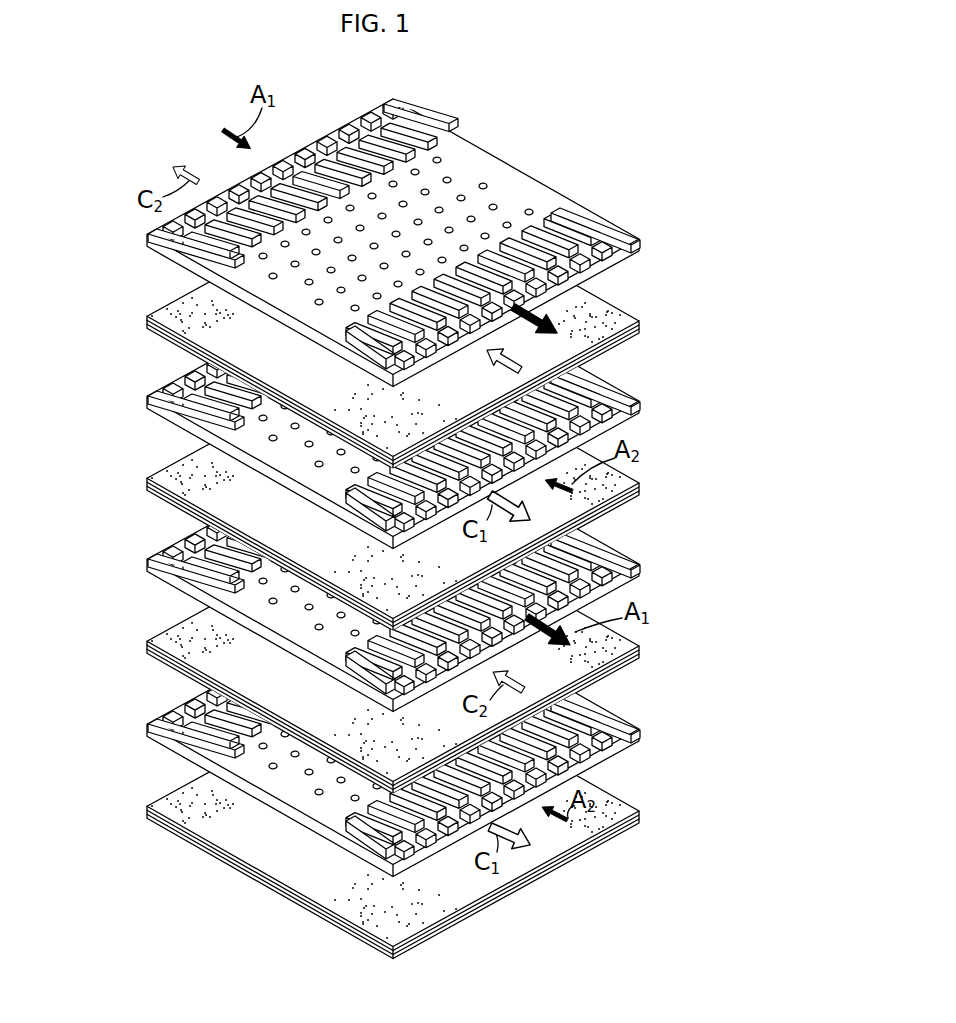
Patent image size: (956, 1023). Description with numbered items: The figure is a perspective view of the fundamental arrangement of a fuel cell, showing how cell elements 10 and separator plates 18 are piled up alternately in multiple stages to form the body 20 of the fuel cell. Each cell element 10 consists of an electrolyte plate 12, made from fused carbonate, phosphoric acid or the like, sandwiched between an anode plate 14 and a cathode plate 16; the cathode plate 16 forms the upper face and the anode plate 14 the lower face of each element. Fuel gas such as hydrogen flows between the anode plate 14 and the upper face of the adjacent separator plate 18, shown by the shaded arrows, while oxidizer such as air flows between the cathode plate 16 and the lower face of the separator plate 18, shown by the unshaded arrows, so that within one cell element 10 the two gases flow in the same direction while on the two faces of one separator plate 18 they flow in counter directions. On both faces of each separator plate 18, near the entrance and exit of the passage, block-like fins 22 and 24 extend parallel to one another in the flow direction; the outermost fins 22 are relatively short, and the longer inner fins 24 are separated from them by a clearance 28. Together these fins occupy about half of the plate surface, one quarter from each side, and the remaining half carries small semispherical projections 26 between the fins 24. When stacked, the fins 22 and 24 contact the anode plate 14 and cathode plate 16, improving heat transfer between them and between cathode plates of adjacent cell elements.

The cell element 10 is at (399, 570).
The electrolyte plate 12 is at (148, 812).
The anode plate 14 is at (152, 821).
The cathode plate 16 is at (157, 808).
The separator plate 18 is at (399, 467).
The body of the fuel cell 20 is at (100, 355).
The outermost fins 22 is at (633, 715).
The fins 24 is at (577, 717).
The small semispherical projections 26 is at (273, 768).
The clearance 28 is at (183, 568).